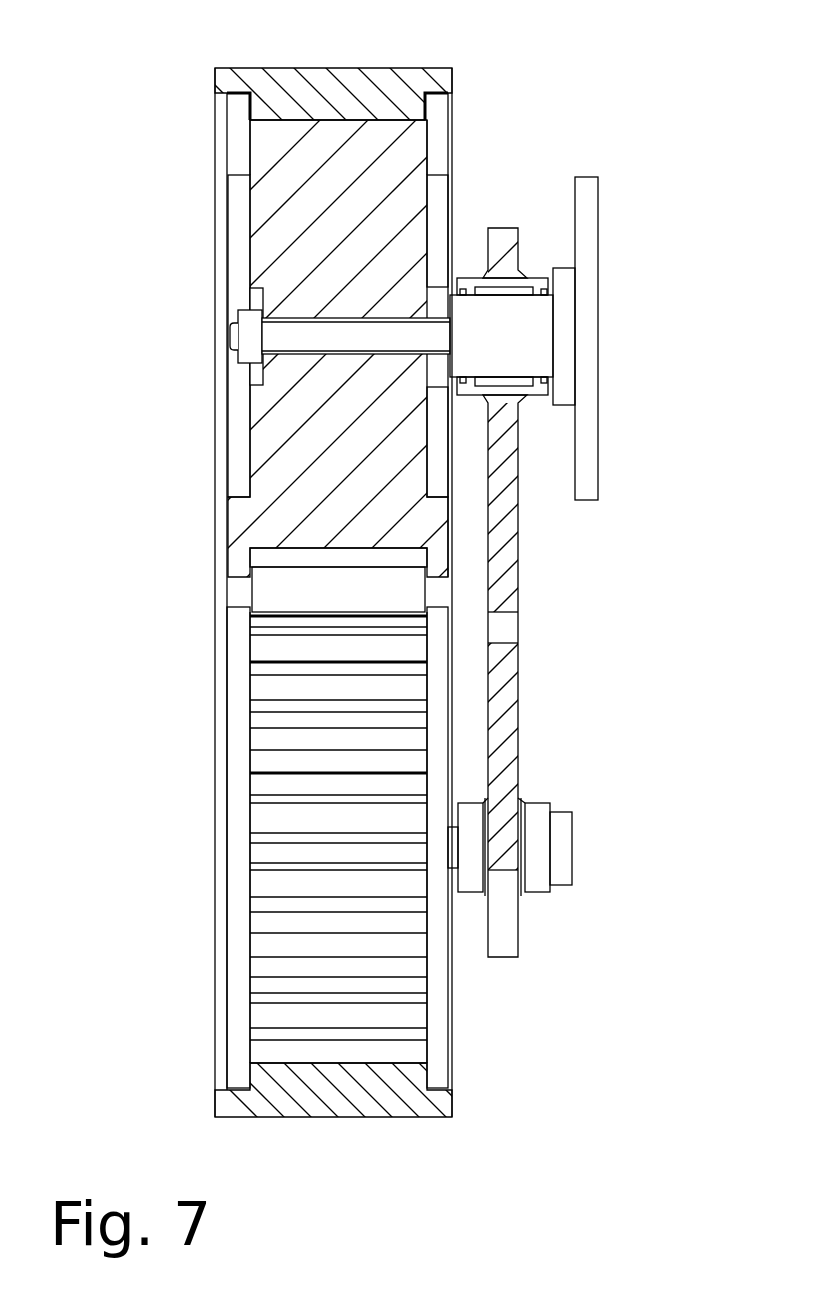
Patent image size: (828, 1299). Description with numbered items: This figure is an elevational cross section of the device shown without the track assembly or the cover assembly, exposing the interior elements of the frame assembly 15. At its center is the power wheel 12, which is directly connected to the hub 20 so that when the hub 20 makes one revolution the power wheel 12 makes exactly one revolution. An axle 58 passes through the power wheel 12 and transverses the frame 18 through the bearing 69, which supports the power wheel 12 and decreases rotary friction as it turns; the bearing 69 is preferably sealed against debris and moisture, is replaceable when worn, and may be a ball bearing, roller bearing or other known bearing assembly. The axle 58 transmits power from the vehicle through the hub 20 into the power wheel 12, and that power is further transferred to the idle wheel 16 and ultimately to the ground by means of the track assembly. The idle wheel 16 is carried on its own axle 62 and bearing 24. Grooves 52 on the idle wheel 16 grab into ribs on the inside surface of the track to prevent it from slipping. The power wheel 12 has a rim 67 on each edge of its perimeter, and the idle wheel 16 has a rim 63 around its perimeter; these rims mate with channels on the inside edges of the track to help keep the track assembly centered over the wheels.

The power wheel 12 is at (285, 163).
The frame assembly 15 is at (566, 587).
The idle wheel 16 is at (330, 855).
The frame 18 is at (507, 717).
The hub 20 is at (588, 237).
The bearing 24 is at (520, 895).
The grooves 52 is at (290, 740).
The axle 58 is at (325, 332).
The axle 62 is at (450, 853).
The rim 63 is at (437, 767).
The rim 67 is at (238, 103).
The bearing 69 is at (545, 278).